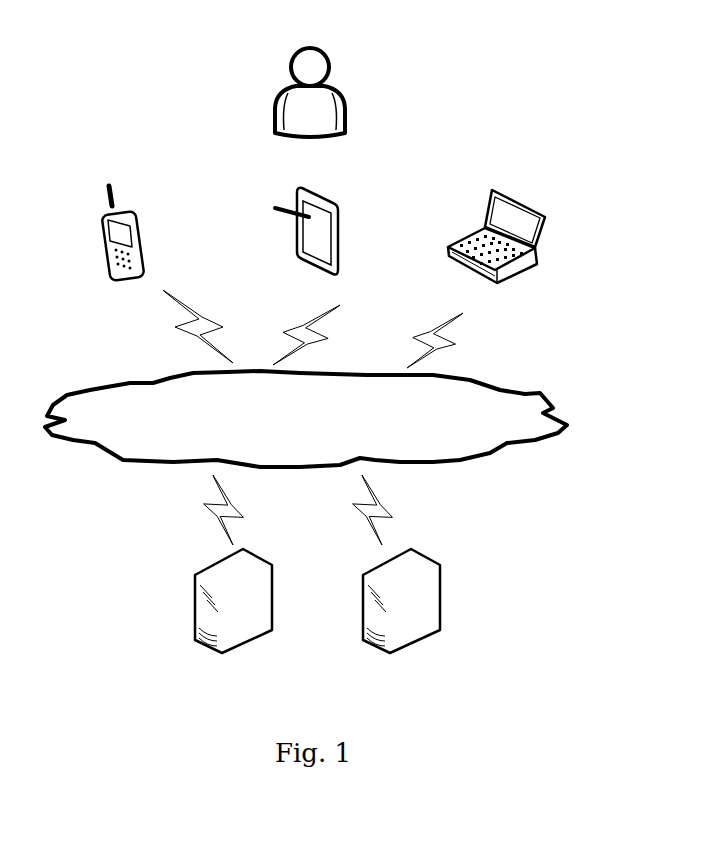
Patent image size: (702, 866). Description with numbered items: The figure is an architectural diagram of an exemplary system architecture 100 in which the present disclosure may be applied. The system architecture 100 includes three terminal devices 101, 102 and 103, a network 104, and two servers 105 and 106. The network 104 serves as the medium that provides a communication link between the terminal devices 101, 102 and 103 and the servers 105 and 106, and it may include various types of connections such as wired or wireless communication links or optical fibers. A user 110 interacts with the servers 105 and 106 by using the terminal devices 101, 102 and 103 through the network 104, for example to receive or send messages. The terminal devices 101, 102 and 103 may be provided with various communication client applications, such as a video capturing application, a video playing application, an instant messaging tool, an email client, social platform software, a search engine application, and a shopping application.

The system architecture 100 is at (577, 45).
The user 110 is at (310, 107).
The terminal device 101 is at (121, 249).
The terminal device 102 is at (306, 248).
The terminal device 103 is at (496, 253).
The network 104 is at (306, 419).
The server 105 is at (233, 618).
The server 106 is at (401, 618).